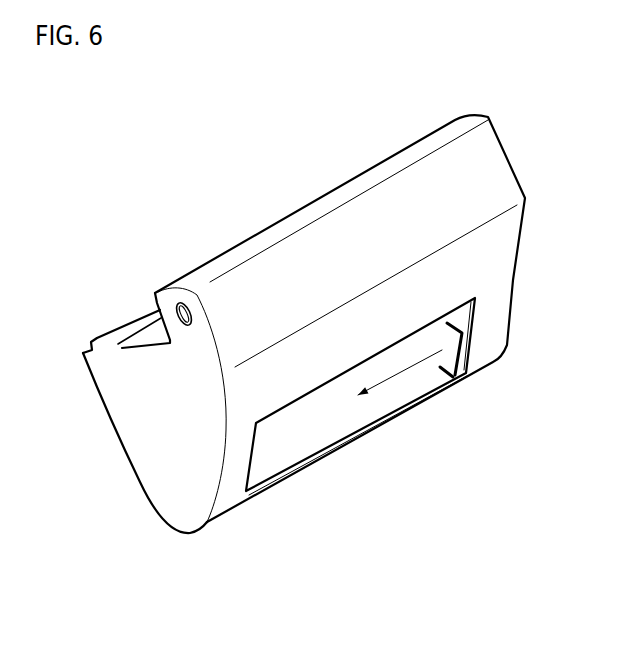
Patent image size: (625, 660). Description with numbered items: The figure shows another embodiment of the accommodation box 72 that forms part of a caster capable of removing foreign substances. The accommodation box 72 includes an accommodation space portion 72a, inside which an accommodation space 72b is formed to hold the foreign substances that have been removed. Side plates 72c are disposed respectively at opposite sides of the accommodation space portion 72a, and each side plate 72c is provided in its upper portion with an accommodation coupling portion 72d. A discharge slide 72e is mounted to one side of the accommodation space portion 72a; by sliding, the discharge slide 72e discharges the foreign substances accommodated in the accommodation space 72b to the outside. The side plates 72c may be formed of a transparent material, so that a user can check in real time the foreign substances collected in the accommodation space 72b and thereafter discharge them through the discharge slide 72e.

The accommodation box 72 is at (177, 163).
The accommodation space portion 72a is at (233, 497).
The accommodation space 72b is at (147, 325).
The side plate 72c is at (160, 475).
The accommodation coupling portion 72d is at (179, 300).
The discharge slide 72e is at (412, 383).